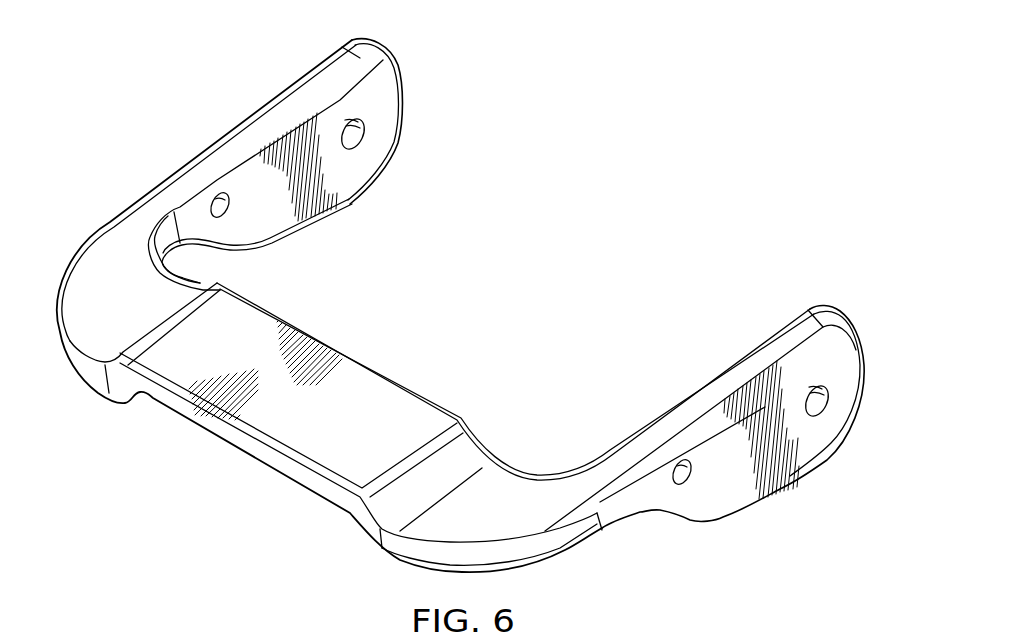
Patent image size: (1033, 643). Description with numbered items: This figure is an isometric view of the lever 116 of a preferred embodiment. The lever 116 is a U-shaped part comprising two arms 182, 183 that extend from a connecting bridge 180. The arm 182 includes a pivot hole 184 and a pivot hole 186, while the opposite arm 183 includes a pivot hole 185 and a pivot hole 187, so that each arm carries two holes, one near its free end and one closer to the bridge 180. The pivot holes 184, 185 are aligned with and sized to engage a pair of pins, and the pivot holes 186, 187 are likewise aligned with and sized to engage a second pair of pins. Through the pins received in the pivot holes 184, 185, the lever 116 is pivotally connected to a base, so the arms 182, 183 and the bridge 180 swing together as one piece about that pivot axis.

The lever 116 is at (672, 70).
The bridge 180 is at (371, 387).
The arm 182 is at (768, 352).
The arm 183 is at (273, 110).
The pivot hole 184 is at (827, 414).
The pivot hole 185 is at (362, 149).
The pivot hole 186 is at (690, 484).
The pivot hole 187 is at (228, 207).